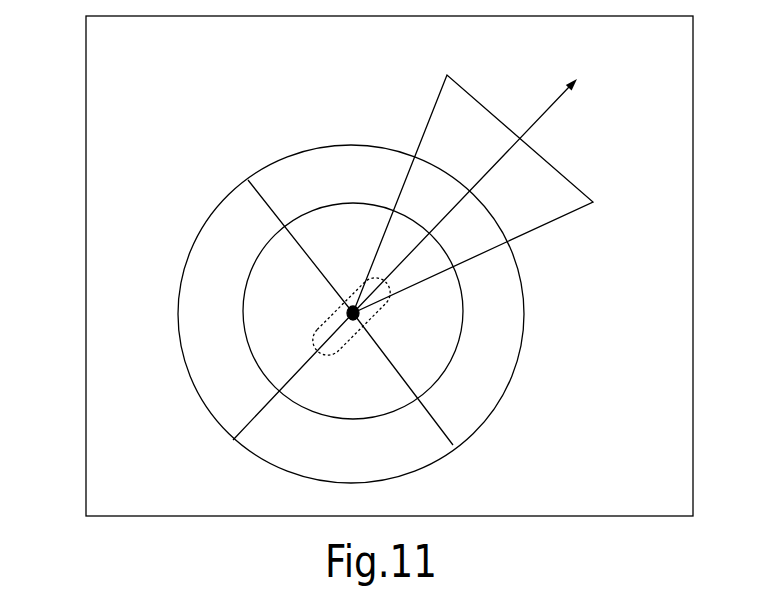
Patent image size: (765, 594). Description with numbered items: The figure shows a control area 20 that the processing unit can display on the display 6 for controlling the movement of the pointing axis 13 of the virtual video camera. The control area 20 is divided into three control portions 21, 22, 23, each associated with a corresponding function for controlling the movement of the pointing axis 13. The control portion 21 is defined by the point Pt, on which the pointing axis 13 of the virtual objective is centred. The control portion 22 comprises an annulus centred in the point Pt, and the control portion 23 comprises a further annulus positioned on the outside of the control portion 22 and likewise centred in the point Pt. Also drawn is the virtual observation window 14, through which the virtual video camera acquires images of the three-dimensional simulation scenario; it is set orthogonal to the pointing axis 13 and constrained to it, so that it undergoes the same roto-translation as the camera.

The display 6 is at (124, 164).
The point Pt is at (340, 299).
The control portion 21 is at (352, 306).
The pointing axis 13 is at (417, 250).
The virtual observation window 14 is at (558, 156).
The control area 20 is at (417, 316).
The control portion 22 is at (470, 352).
The control portion 23 is at (534, 320).